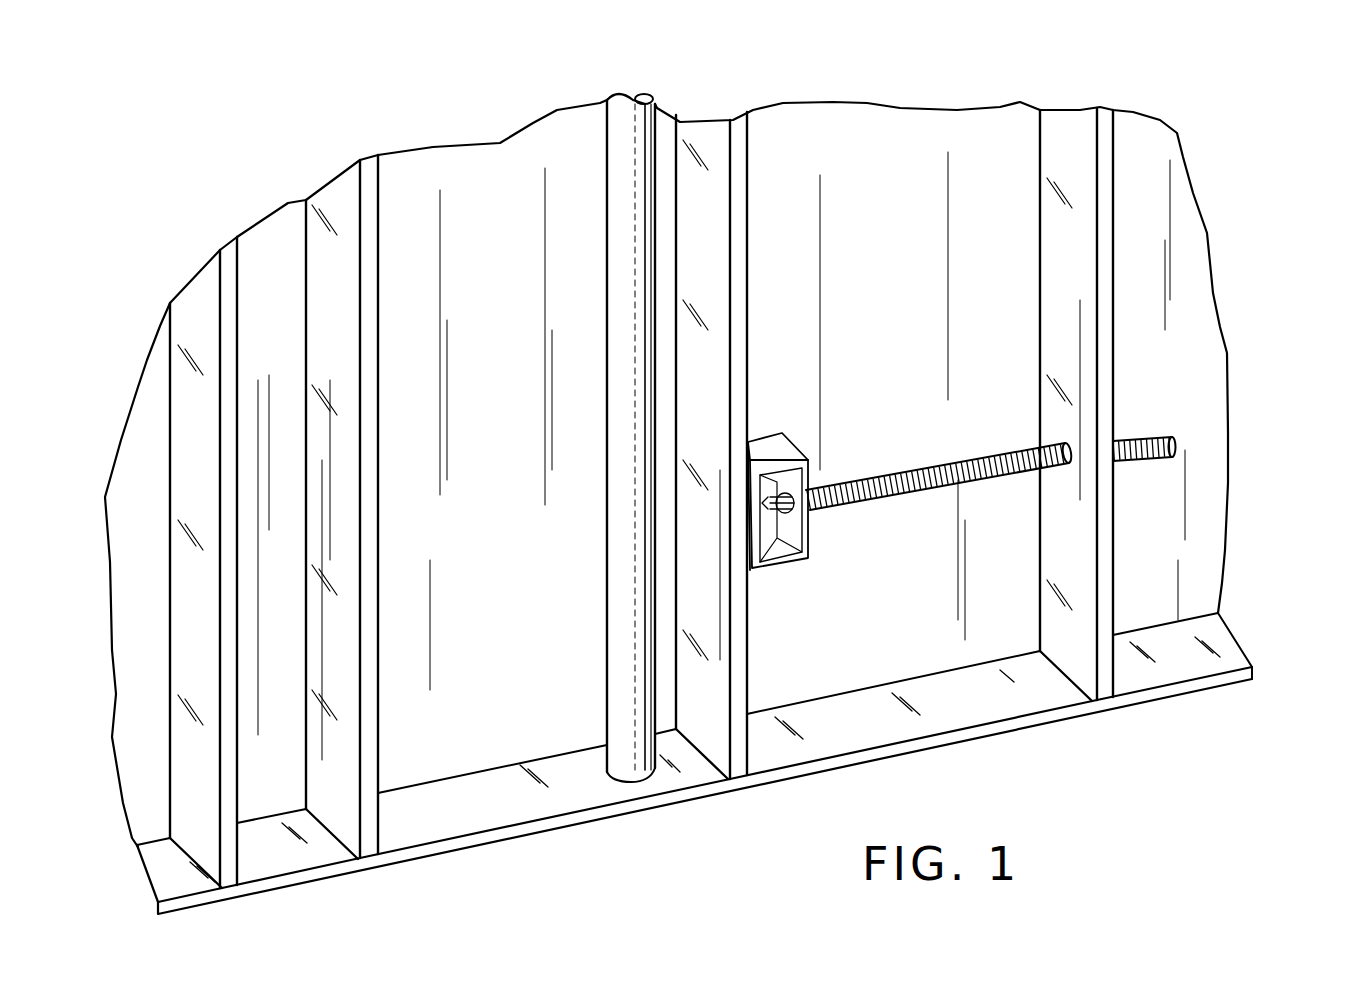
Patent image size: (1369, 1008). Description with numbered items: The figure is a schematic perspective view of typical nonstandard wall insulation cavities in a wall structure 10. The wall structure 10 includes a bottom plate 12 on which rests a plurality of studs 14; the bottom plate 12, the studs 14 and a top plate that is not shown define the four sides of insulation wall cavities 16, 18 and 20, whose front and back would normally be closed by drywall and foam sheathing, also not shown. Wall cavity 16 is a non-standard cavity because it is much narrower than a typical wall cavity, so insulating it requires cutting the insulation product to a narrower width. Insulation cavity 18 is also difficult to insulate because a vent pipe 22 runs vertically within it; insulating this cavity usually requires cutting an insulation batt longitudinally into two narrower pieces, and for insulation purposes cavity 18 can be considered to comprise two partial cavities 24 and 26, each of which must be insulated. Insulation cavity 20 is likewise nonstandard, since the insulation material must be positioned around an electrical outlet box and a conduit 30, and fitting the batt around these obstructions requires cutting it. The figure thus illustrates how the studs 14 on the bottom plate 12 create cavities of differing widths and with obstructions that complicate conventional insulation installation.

The wall structure 10 is at (1245, 208).
The bottom plate 12 is at (1193, 613).
The studs 14 is at (337, 180).
The insulation wall cavity 16 is at (270, 217).
The insulation cavity 18 is at (492, 176).
The insulation cavity 20 is at (862, 153).
The vent pipe 22 is at (603, 285).
The partial cavity 24 is at (482, 742).
The partial cavity 26 is at (665, 715).
The conduit 30 is at (1172, 440).